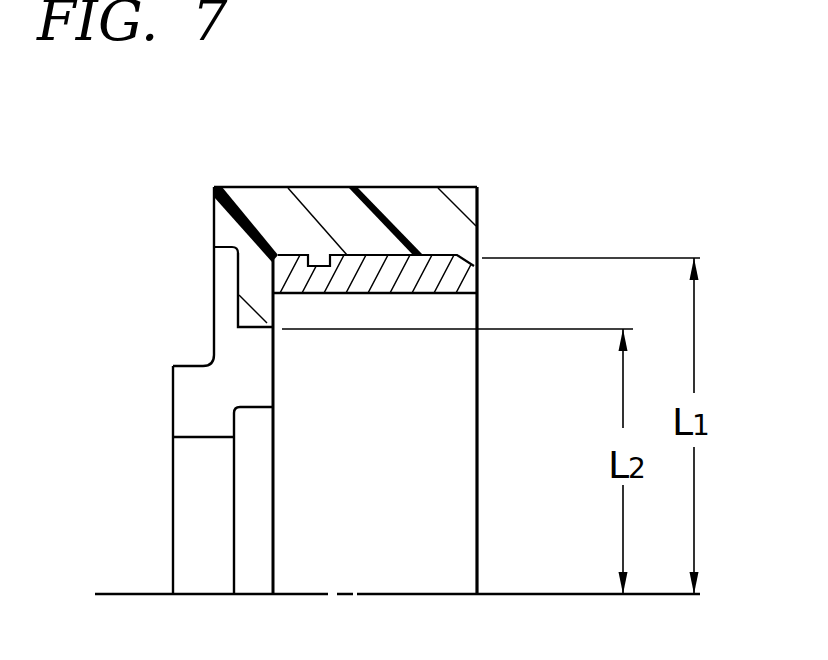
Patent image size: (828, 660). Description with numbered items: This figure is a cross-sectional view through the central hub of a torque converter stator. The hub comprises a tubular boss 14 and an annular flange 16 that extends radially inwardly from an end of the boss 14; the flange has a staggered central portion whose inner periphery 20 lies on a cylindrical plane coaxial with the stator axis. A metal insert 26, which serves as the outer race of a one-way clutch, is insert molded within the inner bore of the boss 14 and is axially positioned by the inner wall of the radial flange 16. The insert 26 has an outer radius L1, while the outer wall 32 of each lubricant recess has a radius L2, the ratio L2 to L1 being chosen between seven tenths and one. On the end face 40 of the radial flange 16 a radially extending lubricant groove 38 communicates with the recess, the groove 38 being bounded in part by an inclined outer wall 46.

The tubular boss 14 is at (440, 227).
The annular flange 16 is at (257, 302).
The inner periphery 20 is at (215, 440).
The metal insert 26 is at (390, 275).
The outer wall 32 is at (247, 328).
The lubricant groove 38 is at (223, 276).
The end face 40 is at (212, 342).
The inclined outer wall 46 is at (225, 247).